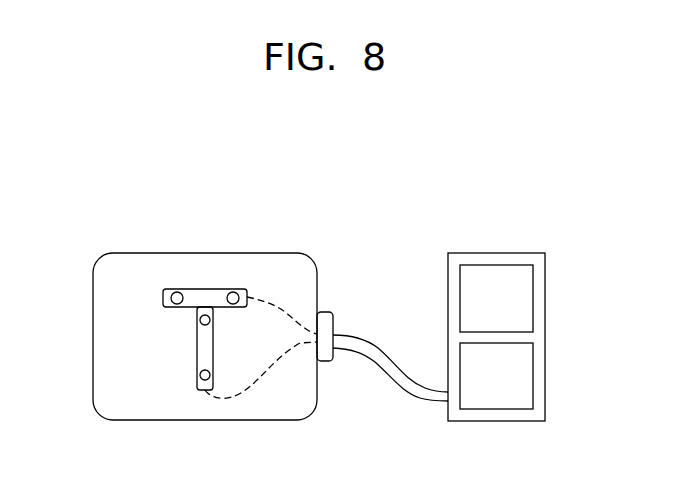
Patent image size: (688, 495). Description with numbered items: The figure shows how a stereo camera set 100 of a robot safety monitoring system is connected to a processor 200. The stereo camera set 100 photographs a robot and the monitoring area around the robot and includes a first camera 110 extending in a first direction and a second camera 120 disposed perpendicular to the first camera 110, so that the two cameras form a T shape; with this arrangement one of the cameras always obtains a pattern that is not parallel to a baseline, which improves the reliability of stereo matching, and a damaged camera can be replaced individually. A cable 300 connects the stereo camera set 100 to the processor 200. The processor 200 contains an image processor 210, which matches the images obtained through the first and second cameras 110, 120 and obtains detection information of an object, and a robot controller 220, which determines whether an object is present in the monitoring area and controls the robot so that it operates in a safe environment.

The stereo camera set 100 is at (205, 253).
The first camera 110 is at (163, 298).
The second camera 120 is at (197, 358).
The processor 200 is at (498, 253).
The image processor 210 is at (533, 298).
The robot controller 220 is at (533, 377).
The cable 300 is at (373, 360).